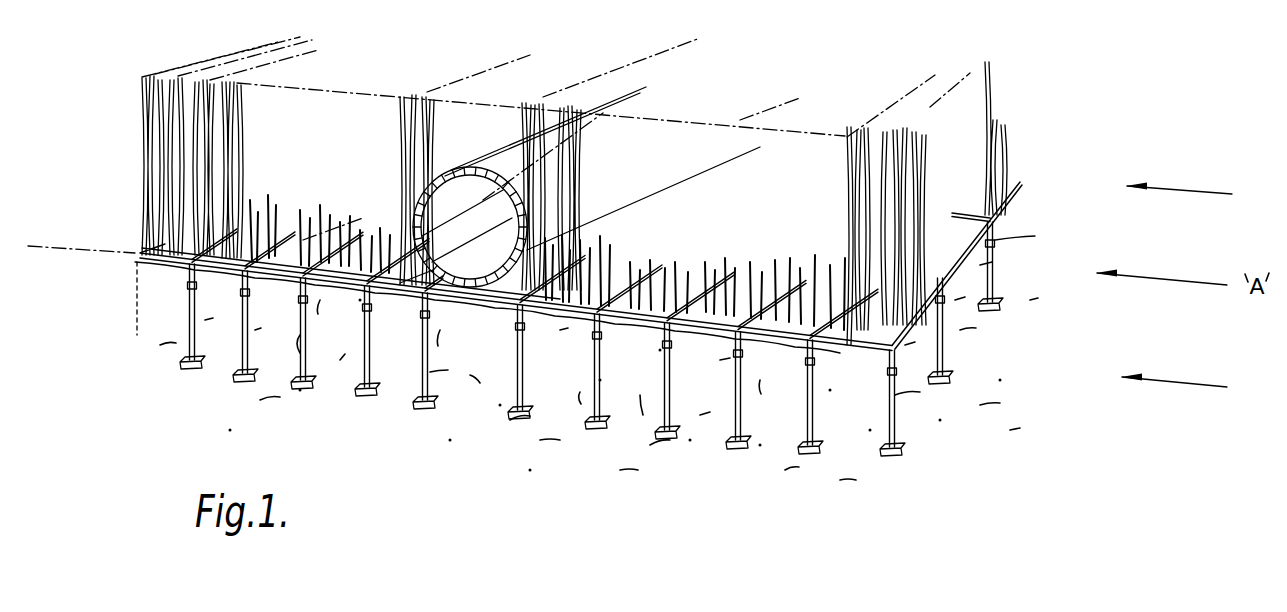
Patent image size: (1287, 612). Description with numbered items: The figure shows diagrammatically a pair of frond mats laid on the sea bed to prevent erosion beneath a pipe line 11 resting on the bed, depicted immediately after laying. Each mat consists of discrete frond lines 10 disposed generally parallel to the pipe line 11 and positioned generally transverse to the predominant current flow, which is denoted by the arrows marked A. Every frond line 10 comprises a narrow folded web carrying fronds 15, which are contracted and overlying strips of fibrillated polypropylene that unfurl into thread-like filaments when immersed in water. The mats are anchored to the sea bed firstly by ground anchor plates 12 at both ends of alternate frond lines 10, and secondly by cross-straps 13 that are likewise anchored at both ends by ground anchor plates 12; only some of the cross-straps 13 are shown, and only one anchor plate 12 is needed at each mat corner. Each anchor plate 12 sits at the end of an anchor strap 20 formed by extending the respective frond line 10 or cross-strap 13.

The frond line 10 is at (336, 226).
The pipe line 11 is at (497, 162).
The ground anchor plate 12 is at (197, 362).
The cross-strap 13 is at (963, 212).
The frond 15 is at (400, 132).
The anchor strap 20 is at (809, 398).